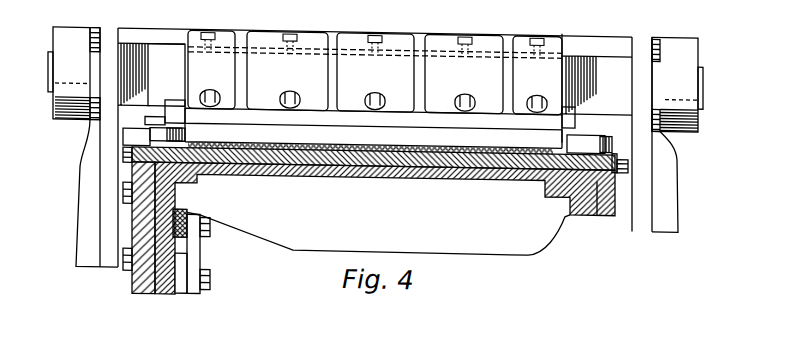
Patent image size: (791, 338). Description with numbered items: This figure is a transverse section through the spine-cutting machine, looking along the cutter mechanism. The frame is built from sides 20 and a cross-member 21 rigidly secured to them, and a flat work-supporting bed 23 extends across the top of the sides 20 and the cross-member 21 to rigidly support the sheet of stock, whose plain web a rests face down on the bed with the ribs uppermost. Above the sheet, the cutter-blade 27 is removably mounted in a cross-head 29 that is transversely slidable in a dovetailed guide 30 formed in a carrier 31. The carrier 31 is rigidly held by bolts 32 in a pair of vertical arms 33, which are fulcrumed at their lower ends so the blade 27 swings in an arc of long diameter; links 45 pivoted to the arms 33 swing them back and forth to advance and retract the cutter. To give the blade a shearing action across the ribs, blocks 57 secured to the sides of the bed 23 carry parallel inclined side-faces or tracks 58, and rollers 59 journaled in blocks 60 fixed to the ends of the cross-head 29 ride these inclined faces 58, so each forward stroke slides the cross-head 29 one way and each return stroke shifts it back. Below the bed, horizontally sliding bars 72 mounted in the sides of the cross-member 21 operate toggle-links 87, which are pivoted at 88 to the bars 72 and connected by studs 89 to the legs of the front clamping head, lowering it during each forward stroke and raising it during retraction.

The frame sides 20 is at (130, 271).
The cross-member 21 is at (165, 290).
The work-supporting bed 23 is at (352, 161).
The cutter-blade 27 is at (373, 110).
The cross-head 29 is at (485, 30).
The dovetailed guide 30 is at (143, 97).
The carrier 31 is at (599, 32).
The bolts 32 is at (92, 93).
The vertical arms 33 is at (80, 196).
The links 45 is at (80, 26).
The blocks 57 is at (125, 144).
The inclined side-faces 58 is at (143, 132).
The rollers 59 is at (690, 195).
The blocks 60 is at (182, 109).
The bars 72 is at (185, 235).
The toggle-links 87 is at (200, 251).
The pivots 88 is at (208, 226).
The studs 89 is at (210, 276).
The web a is at (307, 153).